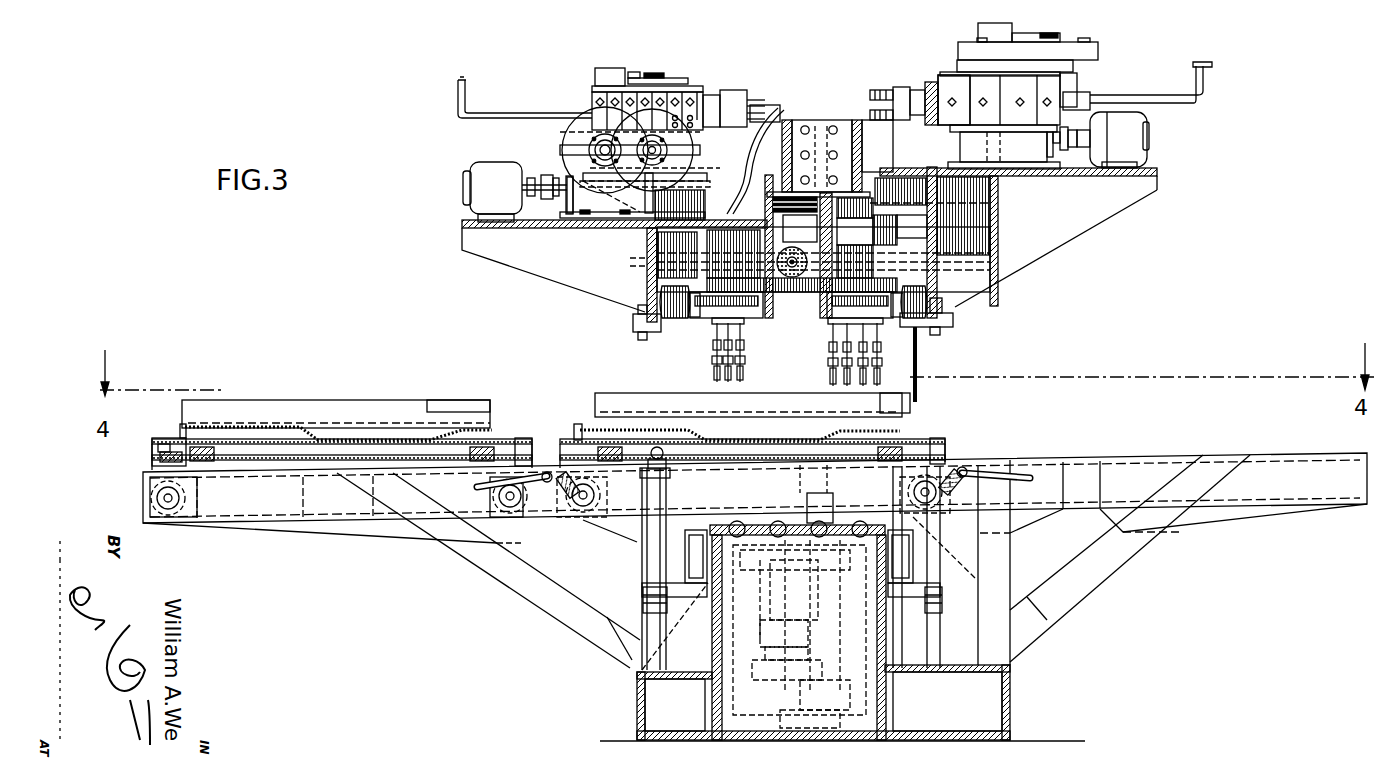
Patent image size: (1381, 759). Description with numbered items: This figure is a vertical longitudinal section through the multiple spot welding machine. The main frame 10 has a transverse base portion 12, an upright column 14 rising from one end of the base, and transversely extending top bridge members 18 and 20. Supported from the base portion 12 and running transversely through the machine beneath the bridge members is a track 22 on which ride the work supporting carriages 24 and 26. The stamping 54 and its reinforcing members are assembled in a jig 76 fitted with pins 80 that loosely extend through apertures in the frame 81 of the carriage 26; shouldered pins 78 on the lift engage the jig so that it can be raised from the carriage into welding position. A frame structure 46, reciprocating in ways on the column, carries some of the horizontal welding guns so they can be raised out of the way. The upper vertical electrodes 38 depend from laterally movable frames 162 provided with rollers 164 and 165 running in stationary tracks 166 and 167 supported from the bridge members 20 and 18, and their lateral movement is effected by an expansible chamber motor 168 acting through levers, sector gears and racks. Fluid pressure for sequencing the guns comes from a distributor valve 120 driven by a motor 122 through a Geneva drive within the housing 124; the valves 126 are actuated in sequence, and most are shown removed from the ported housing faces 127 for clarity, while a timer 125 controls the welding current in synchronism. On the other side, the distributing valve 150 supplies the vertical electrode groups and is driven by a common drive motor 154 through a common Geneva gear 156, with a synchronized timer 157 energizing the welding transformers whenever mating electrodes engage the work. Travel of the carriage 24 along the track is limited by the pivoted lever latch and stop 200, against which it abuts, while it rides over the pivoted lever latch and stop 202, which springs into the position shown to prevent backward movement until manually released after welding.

The main frame 10 is at (1012, 690).
The transverse base portion 12 is at (638, 690).
The upright column 14 is at (917, 362).
The top bridge member 18 is at (998, 234).
The top bridge member 20 is at (645, 252).
The track 22 is at (348, 525).
The work supporting carriage 24 is at (252, 468).
The work supporting carriage 26 is at (652, 452).
The set of electrodes 38 is at (712, 352).
The frame structure 46 is at (855, 120).
The stamping 54 is at (393, 386).
The jig 76 is at (174, 428).
The shouldered pins 78 is at (664, 452).
The pins 80 is at (152, 456).
The frame of the carriage 81 is at (186, 460).
The distributor valve 120 is at (1078, 78).
The motor 122 is at (1140, 148).
The housing 124 is at (1045, 58).
The timer 125 is at (1024, 33).
The valves 126 is at (910, 70).
The ported housing faces 127 is at (965, 80).
The distributing valve 150 is at (586, 92).
The drive motor 154 is at (470, 172).
The Geneva gear 156 is at (562, 137).
The timer 157 is at (652, 68).
The laterally movable frames 162 is at (797, 298).
The roller 164 is at (680, 322).
The roller 165 is at (938, 296).
The stationary track 166 is at (633, 326).
The stationary track 167 is at (953, 314).
The expansible chamber motor 168 is at (782, 300).
The pivoted lever latch and stop 200 is at (950, 465).
The pivoted lever latch and stop 202 is at (502, 500).